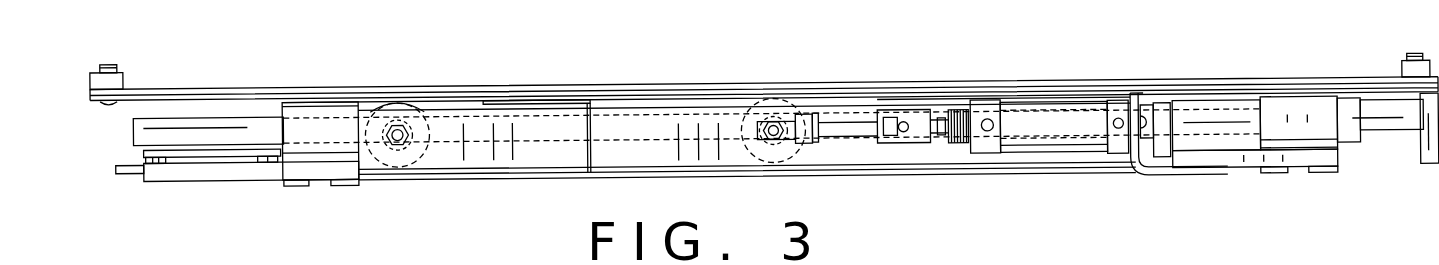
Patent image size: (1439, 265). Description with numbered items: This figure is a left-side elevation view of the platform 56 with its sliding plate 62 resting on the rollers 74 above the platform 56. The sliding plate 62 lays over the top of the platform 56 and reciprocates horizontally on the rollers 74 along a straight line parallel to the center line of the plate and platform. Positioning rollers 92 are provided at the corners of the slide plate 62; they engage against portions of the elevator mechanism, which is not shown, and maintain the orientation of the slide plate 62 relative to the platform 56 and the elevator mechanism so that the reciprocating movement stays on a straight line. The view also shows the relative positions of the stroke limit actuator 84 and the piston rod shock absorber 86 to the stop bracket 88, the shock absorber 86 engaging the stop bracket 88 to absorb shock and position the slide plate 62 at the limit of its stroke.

The positioning rollers 92 is at (123, 82).
The rollers 74 is at (396, 112).
The stop bracket 88 is at (590, 155).
The piston rod shock absorber 86 is at (805, 150).
The stroke limit actuator 84 is at (1062, 149).
The sliding plate 62 is at (1134, 103).
The platform 56 is at (1345, 140).